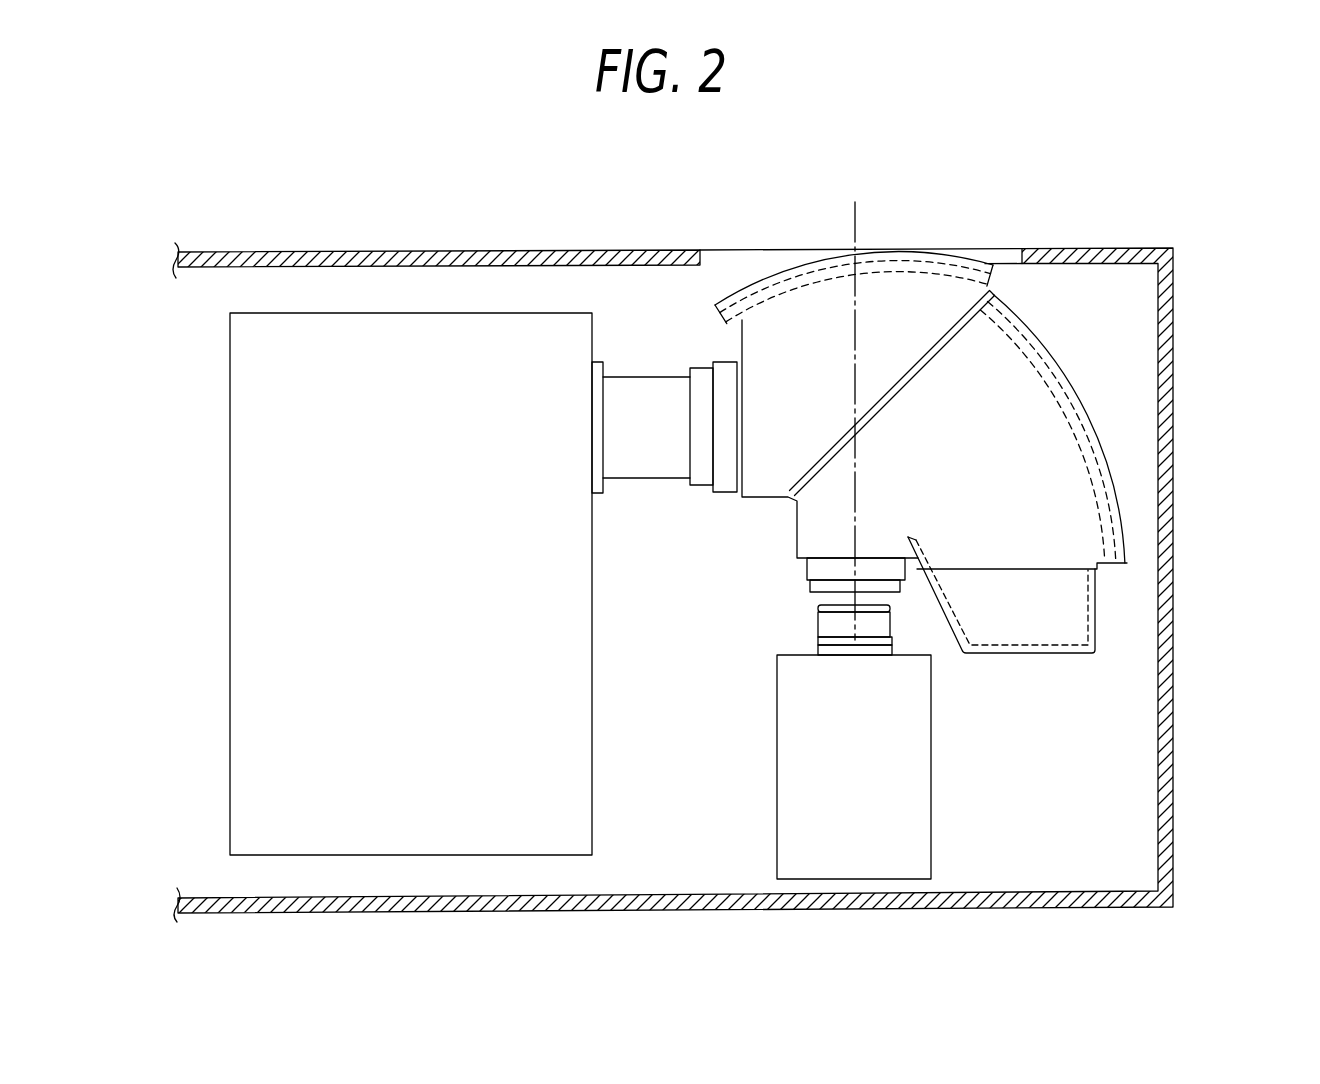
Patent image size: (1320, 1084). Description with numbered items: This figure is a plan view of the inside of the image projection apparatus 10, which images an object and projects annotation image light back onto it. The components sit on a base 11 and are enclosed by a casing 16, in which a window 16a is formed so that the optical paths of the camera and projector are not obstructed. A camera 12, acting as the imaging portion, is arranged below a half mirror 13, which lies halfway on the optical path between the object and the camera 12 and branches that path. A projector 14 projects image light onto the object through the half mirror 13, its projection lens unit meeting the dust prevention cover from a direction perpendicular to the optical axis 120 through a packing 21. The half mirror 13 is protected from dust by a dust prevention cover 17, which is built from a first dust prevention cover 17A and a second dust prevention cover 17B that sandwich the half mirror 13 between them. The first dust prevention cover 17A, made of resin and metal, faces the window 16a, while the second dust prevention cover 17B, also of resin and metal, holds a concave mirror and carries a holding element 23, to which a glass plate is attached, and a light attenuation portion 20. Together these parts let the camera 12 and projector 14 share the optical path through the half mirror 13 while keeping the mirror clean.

The image projection apparatus 10 is at (452, 189).
The base 11 is at (1107, 725).
The camera 12 is at (853, 863).
The half mirror 13 is at (940, 336).
The projector 14 is at (292, 335).
The casing 16 is at (430, 255).
The window 16a is at (700, 250).
The dust prevention cover 17 is at (1120, 423).
The first dust prevention cover 17A is at (788, 308).
The second dust prevention cover 17B is at (1070, 468).
The light attenuation portion 20 is at (1072, 597).
The packing 21 is at (740, 498).
The holding element 23 is at (815, 568).
The optical axis 120 is at (855, 226).